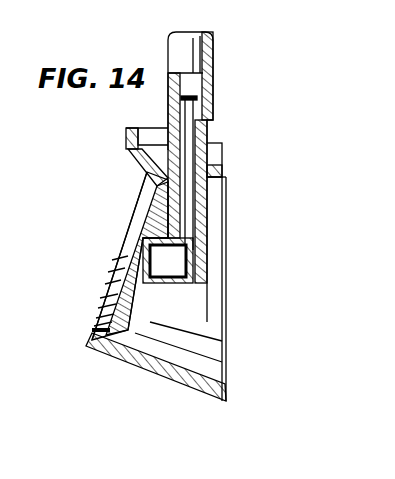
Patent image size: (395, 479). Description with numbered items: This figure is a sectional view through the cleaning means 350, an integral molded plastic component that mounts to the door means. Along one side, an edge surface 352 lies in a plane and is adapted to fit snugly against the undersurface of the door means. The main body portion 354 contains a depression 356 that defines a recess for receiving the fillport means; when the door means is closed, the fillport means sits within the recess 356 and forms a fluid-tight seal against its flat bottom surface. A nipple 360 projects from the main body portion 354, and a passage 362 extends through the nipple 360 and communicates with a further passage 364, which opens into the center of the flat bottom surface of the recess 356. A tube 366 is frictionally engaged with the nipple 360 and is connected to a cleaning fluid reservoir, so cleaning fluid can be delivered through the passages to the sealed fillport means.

The cleaning means 350 is at (266, 122).
The edge surface 352 is at (228, 388).
The main body portion 354 is at (142, 222).
The depression 356 is at (100, 328).
The nipple 360 is at (130, 156).
The passage 362 is at (211, 161).
The further passage 364 is at (170, 262).
The tube 366 is at (212, 38).